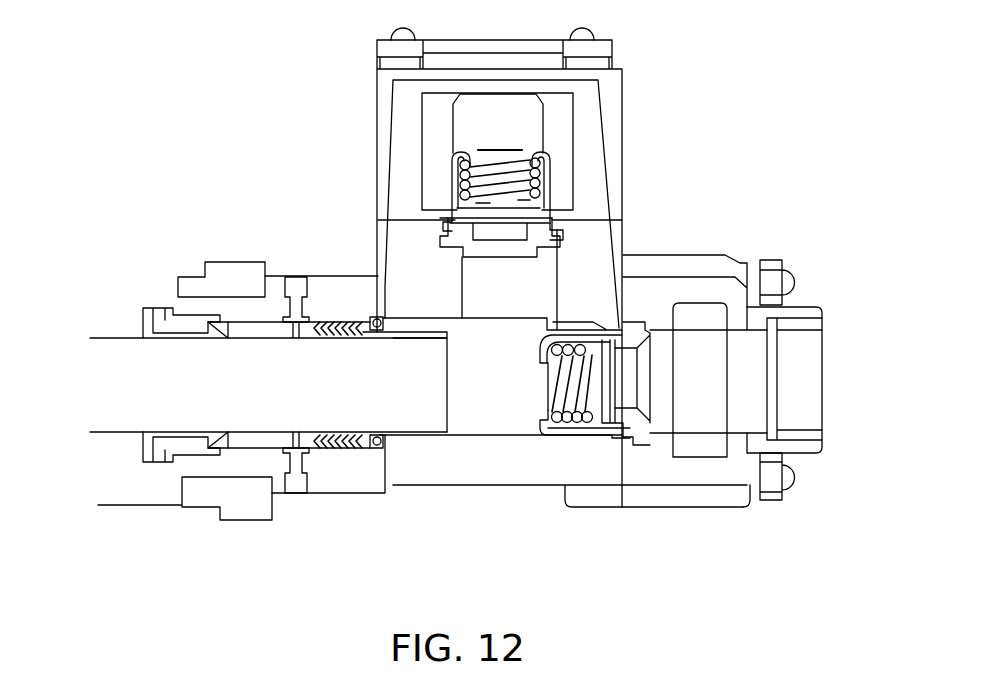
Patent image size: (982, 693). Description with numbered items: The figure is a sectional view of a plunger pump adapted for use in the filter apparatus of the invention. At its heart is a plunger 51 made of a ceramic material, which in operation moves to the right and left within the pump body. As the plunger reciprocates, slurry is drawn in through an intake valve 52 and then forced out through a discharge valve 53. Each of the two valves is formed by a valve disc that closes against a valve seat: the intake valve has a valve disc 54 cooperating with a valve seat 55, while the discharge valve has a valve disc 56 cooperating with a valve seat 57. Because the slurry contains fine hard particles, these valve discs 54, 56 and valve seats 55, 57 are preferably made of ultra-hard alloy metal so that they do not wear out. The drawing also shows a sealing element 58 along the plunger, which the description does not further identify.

The plunger 51 is at (422, 417).
The intake valve 52 is at (575, 337).
The discharge valve 53 is at (553, 162).
The valve disc 54 is at (597, 403).
The valve seat 55 is at (612, 387).
The valve disc 56 is at (468, 200).
The valve seat 57 is at (467, 216).
The chevron seal 58 is at (343, 450).